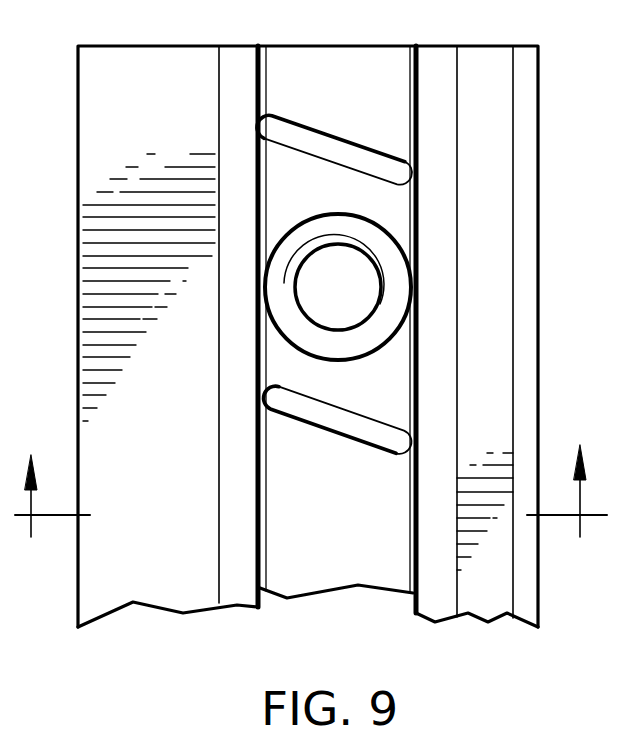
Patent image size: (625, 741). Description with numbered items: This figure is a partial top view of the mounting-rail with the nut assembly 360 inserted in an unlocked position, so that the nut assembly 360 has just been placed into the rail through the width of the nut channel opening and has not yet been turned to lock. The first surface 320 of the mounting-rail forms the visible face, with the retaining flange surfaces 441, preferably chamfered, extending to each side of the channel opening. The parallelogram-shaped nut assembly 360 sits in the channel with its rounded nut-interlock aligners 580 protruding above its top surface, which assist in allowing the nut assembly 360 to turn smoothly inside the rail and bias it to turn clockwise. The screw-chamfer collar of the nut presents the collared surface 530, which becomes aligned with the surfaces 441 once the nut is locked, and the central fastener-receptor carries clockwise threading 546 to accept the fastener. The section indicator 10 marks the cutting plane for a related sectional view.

The first surface 320 is at (128, 68).
The surface 441 is at (242, 60).
The nut-interlock aligner 580 is at (368, 157).
The collared surface 530 is at (350, 228).
The threading 546 is at (333, 242).
The nut assembly 360 is at (357, 448).
The section line 10- 10 is at (316, 466).